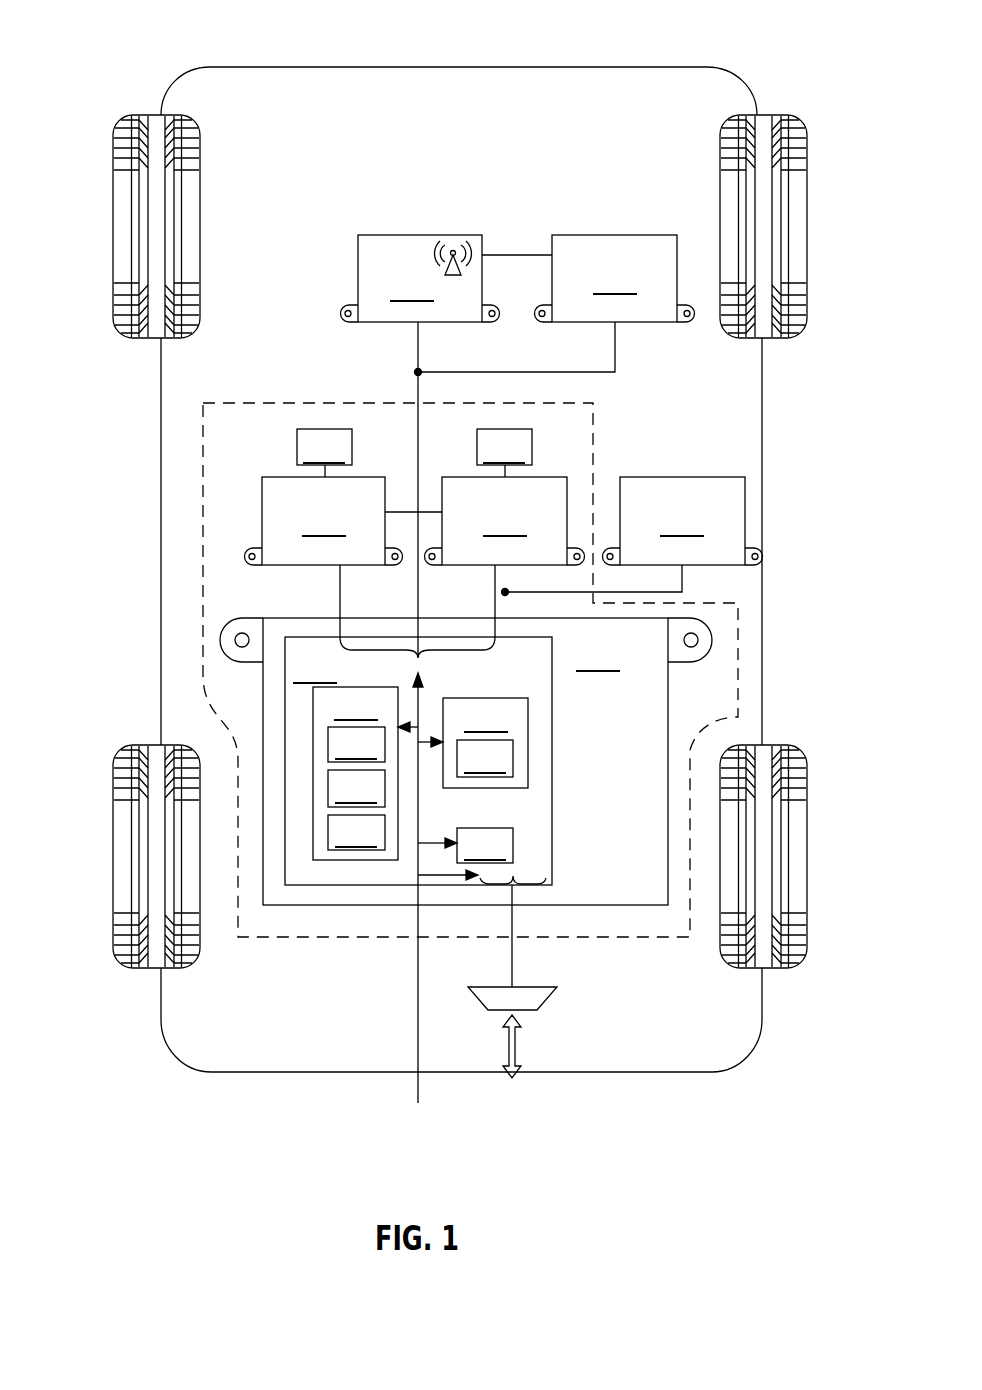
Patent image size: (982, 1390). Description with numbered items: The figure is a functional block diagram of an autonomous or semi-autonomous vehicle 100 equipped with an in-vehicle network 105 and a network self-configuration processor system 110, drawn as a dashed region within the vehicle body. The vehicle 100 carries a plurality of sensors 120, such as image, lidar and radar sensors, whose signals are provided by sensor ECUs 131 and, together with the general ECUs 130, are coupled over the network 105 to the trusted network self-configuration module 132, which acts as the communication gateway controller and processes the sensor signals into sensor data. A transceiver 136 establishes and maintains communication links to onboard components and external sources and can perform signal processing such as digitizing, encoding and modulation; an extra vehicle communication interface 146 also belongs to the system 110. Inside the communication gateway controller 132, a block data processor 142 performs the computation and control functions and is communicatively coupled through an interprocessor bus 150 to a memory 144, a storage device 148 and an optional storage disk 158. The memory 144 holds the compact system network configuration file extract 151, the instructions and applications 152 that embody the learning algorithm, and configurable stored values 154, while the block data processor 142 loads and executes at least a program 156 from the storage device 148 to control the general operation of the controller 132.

The vehicle 100 is at (222, 63).
The network 105 is at (495, 603).
The network self-configuration processor system 110 is at (203, 473).
The sensors 120 is at (477, 440).
The general ECUs 130 is at (710, 629).
The sensor ECUs 131 is at (385, 512).
The trusted network self-configuration module 132 is at (632, 660).
The transceiver 136 is at (405, 235).
The block data processor 142 is at (285, 692).
The memory 144 is at (335, 862).
The extra vehicle communication interface 146 is at (553, 997).
The storage device 148 is at (473, 743).
The interprocessor bus 150 is at (440, 877).
The compact system network configuration file extract 151 is at (328, 735).
The instructions and applications 152 is at (328, 790).
The stored values 154 is at (356, 832).
The program 156 is at (485, 758).
The optional storage disk 158 is at (465, 845).